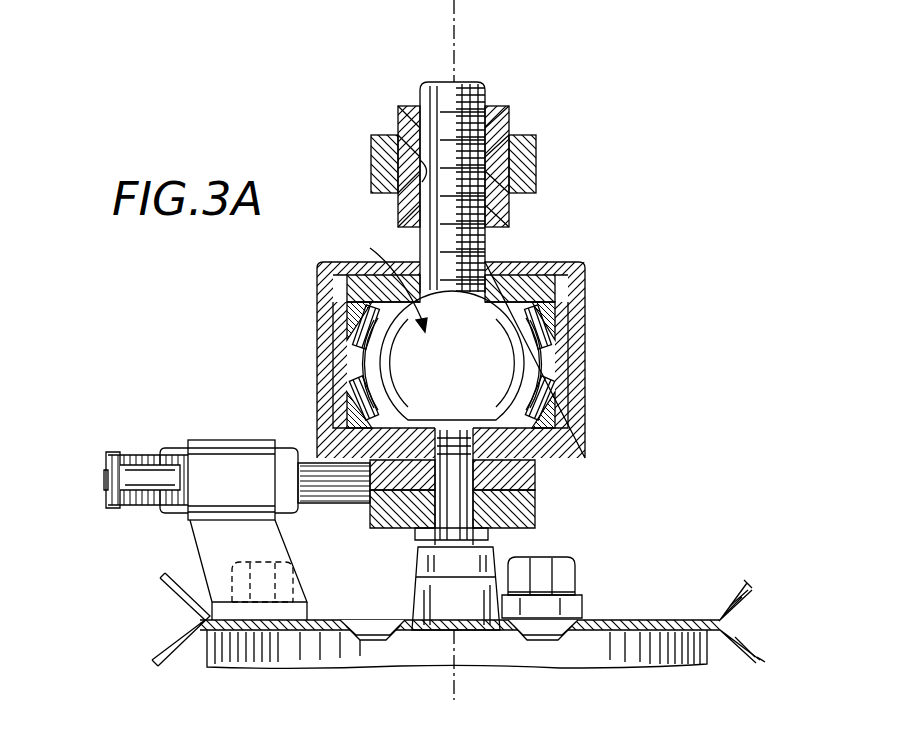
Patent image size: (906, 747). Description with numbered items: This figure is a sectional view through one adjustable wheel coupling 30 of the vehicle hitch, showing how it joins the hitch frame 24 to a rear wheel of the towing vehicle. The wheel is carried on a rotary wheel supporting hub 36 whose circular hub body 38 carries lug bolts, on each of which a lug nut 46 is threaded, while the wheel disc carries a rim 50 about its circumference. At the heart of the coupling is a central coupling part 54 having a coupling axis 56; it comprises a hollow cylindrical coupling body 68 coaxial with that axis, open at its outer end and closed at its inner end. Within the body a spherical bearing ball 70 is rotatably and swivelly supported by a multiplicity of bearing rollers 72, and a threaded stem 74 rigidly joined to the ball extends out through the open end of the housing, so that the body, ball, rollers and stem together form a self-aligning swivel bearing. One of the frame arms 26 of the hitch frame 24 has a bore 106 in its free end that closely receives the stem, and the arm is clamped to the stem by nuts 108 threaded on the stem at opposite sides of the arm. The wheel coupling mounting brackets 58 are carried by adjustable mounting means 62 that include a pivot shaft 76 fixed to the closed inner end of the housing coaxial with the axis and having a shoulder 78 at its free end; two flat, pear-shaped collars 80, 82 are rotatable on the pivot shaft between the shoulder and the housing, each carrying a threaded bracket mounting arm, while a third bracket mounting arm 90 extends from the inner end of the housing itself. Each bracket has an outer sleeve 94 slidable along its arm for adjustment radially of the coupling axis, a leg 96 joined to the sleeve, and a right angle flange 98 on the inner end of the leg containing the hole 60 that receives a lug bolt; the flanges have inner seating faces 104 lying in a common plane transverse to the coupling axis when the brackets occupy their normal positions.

The hitch frame 24 is at (370, 163).
The frame arms 26 is at (538, 152).
The adjustable wheel coupling 30 is at (580, 232).
The wheel supporting hub 36 is at (712, 657).
The hub body 38 is at (660, 668).
The lug nut 46 is at (568, 580).
The rim 50 is at (750, 595).
The central coupling part 54 is at (317, 370).
The coupling axis 56 is at (458, 18).
The wheel coupling mounting bracket 58 is at (245, 443).
The hole 60 is at (262, 606).
The adjustable mounting means 62 is at (120, 506).
The coupling body 68 is at (587, 282).
The bearing ball 70 is at (548, 358).
The bearing rollers 72 is at (360, 325).
The threaded stem 74 is at (487, 92).
The pivot shaft 76 is at (492, 470).
The shoulder 78 is at (418, 548).
The flat collar 80 is at (535, 487).
The flat collar 82 is at (535, 509).
The bracket mounting arm 90 is at (122, 458).
The sleeve 94 is at (196, 440).
The leg 96 is at (205, 546).
The right angle flange 98 is at (584, 607).
The seating face 104 is at (540, 632).
The bore 106 is at (420, 182).
The nut 108 is at (511, 112).